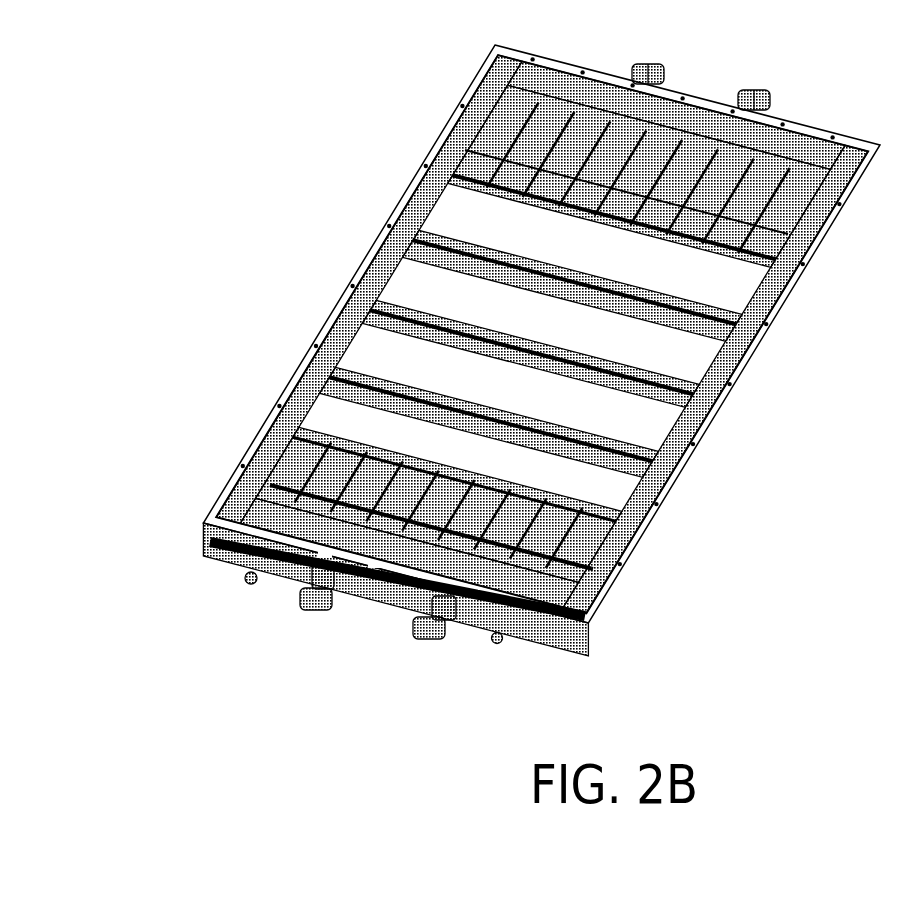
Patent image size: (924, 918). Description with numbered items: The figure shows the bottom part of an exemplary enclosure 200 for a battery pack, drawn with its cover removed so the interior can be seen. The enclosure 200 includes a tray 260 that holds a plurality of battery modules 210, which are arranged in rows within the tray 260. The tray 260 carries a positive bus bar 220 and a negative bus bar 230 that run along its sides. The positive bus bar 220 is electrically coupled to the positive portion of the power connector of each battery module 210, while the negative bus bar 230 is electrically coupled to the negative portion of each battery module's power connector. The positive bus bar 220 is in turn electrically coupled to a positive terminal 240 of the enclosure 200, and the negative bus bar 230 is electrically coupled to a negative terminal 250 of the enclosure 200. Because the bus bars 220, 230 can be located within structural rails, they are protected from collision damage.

The enclosure 200 is at (246, 88).
The battery module 210 is at (458, 97).
The positive bus bar 220 is at (348, 350).
The negative bus bar 230 is at (712, 378).
The positive terminal 240 is at (252, 586).
The negative terminal 250 is at (495, 645).
The tray 260 is at (400, 172).